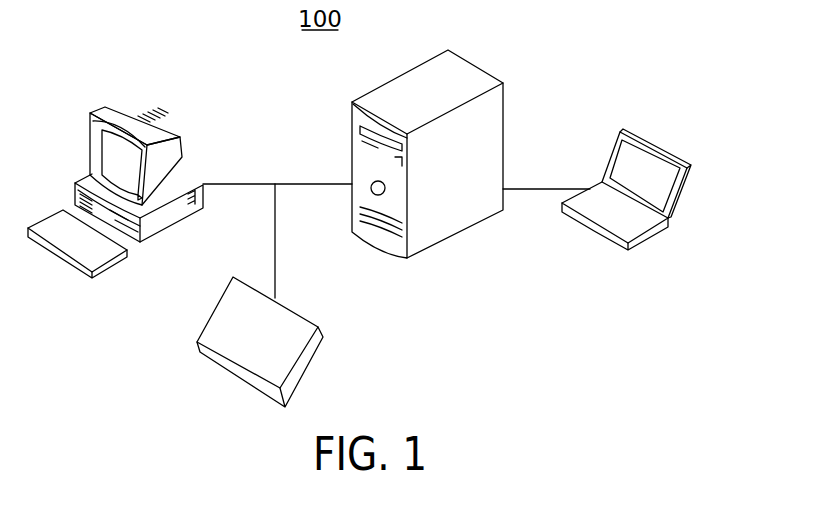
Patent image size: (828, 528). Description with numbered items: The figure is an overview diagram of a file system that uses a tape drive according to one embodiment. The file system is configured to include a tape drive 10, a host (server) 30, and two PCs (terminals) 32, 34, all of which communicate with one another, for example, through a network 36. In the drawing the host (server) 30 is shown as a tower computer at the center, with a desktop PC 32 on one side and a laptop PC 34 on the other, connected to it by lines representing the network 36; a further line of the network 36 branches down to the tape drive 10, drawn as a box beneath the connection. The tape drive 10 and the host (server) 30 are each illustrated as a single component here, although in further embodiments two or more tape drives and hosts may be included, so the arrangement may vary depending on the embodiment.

The tape drive 10 is at (276, 342).
The host (server) 30 is at (480, 70).
The PC (terminal) 32 is at (155, 119).
The PC (terminal) 34 is at (657, 147).
The network 36 is at (276, 237).